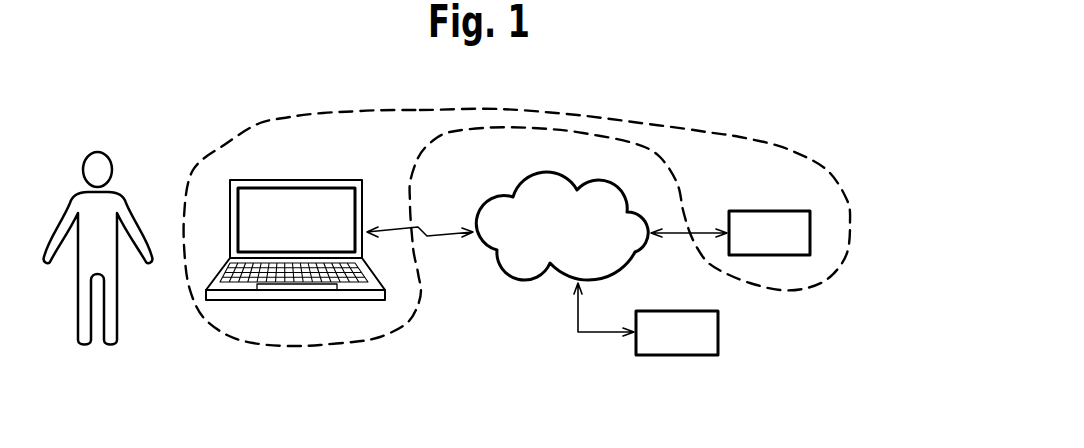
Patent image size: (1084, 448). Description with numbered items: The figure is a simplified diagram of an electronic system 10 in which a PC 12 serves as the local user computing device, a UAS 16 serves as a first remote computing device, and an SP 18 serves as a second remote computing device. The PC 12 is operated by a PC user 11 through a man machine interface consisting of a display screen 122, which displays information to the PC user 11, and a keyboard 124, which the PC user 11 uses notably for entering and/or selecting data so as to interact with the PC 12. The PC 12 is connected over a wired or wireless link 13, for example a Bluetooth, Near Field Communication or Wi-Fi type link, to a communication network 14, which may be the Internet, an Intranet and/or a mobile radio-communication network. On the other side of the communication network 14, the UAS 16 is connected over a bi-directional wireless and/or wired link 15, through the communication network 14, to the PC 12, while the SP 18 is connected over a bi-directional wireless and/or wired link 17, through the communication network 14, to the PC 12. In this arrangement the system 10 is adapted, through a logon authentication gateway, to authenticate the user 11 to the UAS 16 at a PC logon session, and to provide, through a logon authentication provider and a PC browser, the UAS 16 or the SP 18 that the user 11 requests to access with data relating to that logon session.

The electronic system 10 is at (851, 222).
The PC user 11 is at (98, 150).
The PC 12 is at (300, 230).
The display screen 122 is at (310, 187).
The keyboard 124 is at (347, 280).
The wired or wireless link 13 is at (433, 225).
The communication network 14 is at (525, 279).
The wireless and/or wired link 15 is at (675, 234).
The UAS 16 is at (785, 256).
The wireless and/or wired link 17 is at (600, 333).
The SP 18 is at (693, 356).